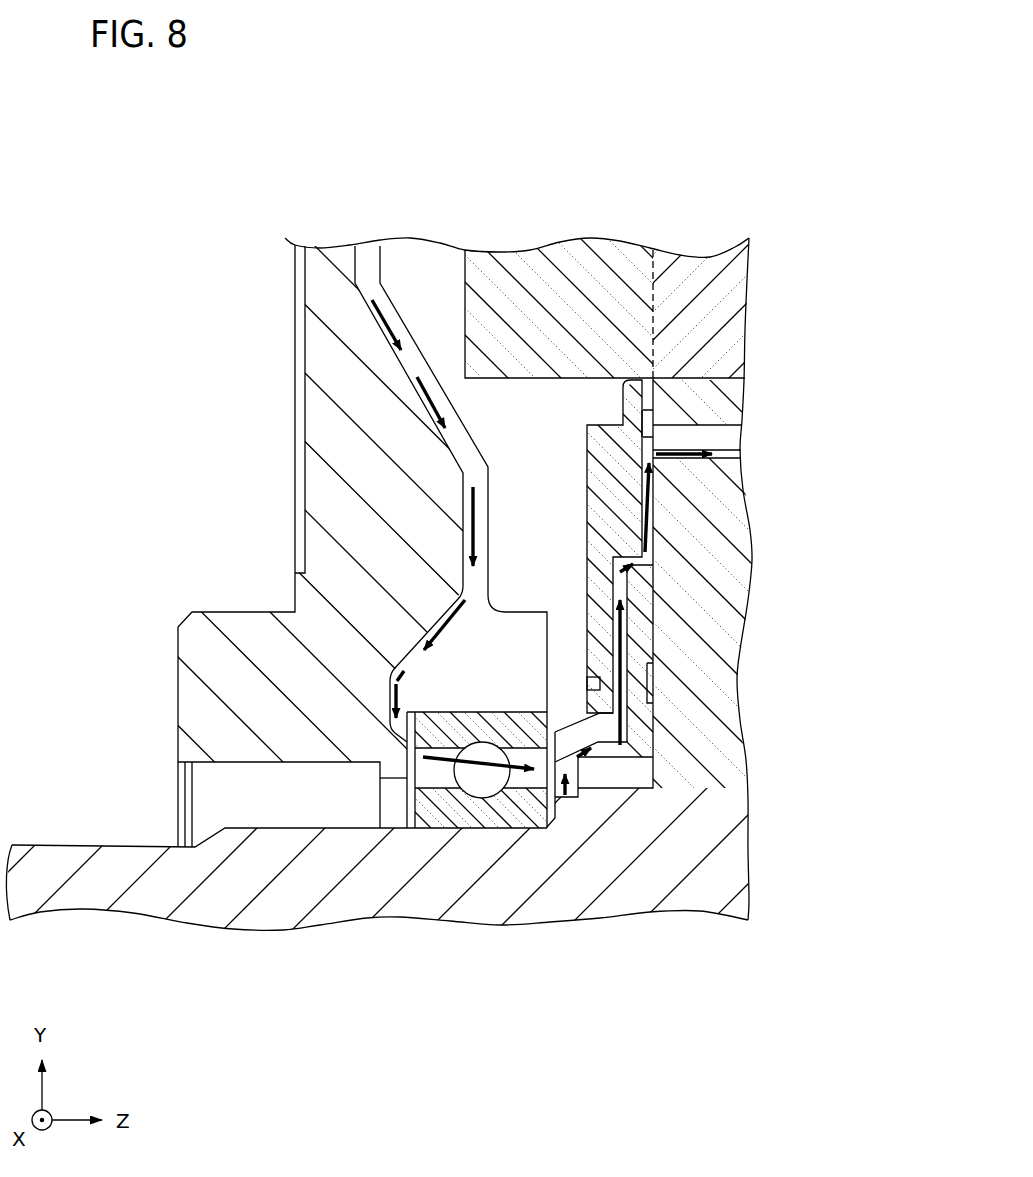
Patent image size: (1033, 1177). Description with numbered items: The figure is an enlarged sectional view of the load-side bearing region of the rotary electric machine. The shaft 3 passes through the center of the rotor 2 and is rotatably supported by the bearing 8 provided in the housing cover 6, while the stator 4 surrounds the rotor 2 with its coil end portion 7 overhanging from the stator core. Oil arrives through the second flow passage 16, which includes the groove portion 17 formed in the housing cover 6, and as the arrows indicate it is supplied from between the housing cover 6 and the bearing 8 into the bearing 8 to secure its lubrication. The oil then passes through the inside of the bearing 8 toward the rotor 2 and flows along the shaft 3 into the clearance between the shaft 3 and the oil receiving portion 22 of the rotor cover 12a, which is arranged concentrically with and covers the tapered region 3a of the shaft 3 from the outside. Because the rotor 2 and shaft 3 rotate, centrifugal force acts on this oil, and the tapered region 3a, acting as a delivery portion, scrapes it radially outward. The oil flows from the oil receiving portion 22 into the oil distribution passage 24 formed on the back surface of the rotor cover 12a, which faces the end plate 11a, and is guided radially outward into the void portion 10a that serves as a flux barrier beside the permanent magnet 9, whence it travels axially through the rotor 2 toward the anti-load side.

The rotor 2 is at (516, 579).
The shaft 3 is at (516, 588).
The tapered region 3a is at (562, 800).
The stator 4 is at (701, 257).
The housing cover 6 is at (283, 477).
The coil end portion 7 is at (550, 250).
The bearing 8 is at (452, 830).
The permanent magnet 9 is at (707, 424).
The void portion 10a is at (718, 452).
The end plate 11a is at (655, 711).
The rotor cover 12a is at (580, 460).
The second flow passage 16 is at (451, 500).
The groove portion 17 is at (386, 326).
The oil receiving portion 22 is at (557, 732).
The oil distribution passage 24 is at (616, 586).